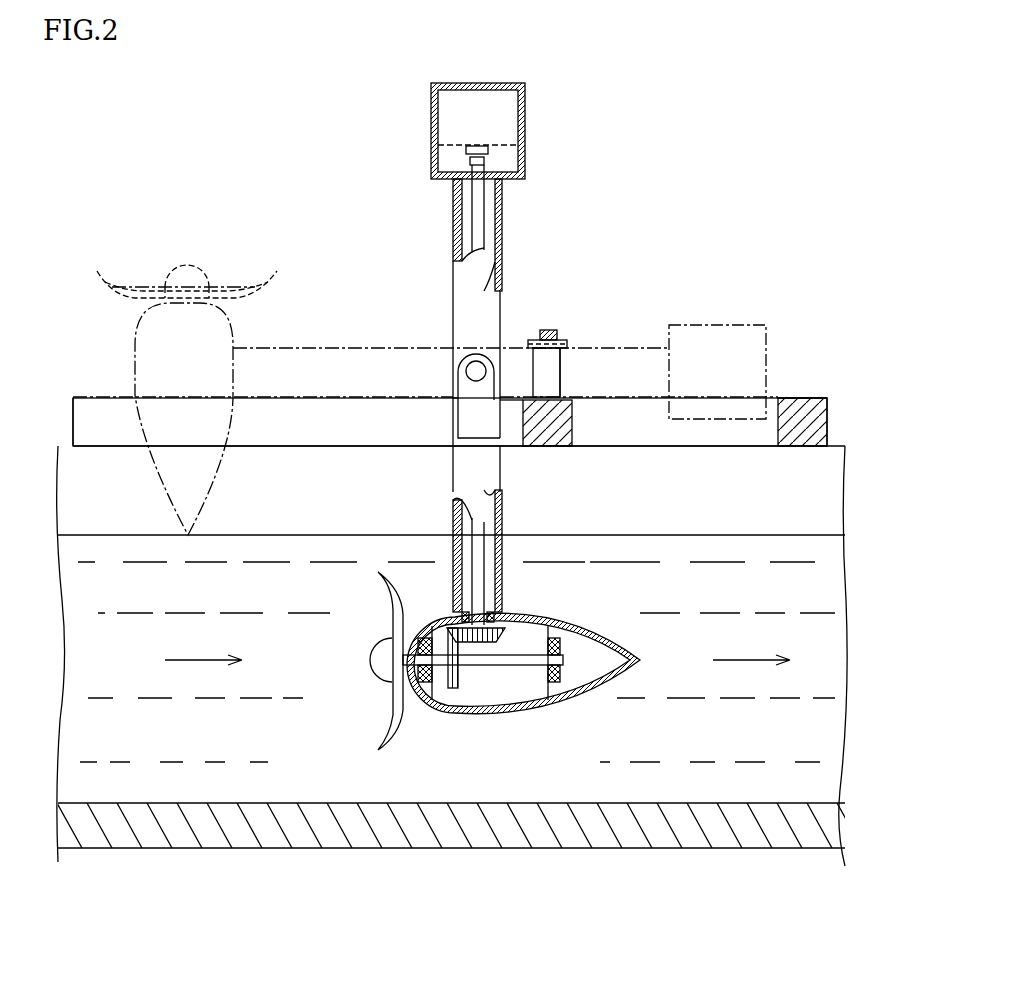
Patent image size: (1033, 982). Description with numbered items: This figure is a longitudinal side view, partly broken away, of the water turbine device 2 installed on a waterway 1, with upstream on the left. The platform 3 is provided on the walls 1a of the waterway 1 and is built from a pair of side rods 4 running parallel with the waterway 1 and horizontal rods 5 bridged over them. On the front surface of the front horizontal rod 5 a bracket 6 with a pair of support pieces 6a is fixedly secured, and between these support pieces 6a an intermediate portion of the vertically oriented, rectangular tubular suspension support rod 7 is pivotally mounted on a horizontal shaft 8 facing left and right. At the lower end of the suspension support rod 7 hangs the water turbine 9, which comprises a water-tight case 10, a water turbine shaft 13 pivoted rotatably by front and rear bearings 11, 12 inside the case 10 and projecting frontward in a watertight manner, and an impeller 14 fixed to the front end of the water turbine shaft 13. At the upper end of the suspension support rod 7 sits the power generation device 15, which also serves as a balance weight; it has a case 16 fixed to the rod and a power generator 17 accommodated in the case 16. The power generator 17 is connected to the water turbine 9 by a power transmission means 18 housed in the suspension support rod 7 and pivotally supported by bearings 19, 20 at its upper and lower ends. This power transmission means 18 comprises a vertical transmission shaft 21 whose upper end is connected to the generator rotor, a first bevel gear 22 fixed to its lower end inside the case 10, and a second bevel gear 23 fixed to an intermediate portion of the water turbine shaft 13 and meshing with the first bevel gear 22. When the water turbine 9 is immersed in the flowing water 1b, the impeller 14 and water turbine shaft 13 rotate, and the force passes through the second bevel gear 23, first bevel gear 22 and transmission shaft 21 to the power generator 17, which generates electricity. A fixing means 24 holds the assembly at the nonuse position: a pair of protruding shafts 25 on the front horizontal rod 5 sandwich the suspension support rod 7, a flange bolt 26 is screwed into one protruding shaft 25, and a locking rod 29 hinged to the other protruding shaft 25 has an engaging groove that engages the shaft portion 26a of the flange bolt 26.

The waterway 1 is at (832, 440).
The wall 1a is at (80, 497).
The flowing water 1b is at (693, 535).
The water turbine device 2 is at (450, 265).
The platform 3 is at (801, 396).
The side rod 4 is at (710, 410).
The horizontal rod 5 is at (560, 424).
The bracket 6 is at (478, 440).
The support piece 6a is at (456, 412).
The suspension support rod 7 is at (453, 300).
The horizontal shaft 8 is at (462, 370).
The water turbine 9 is at (135, 375).
The water-tight case 10 is at (520, 712).
The front bearing 11 is at (455, 692).
The rear bearing 12 is at (562, 672).
The water turbine shaft 13 is at (522, 668).
The impeller 14 is at (138, 284).
The power generation device 15 is at (532, 98).
The case 16 is at (525, 135).
The power generator 17 is at (495, 105).
The power transmission means 18 is at (486, 213).
The bearing 19 is at (462, 212).
The bearing 20 is at (494, 612).
The transmission shaft 21 is at (497, 525).
The first bevel gear 22 is at (507, 634).
The second bevel gear 23 is at (452, 700).
The fixing means 24 is at (553, 330).
The protruding shaft 25 is at (563, 380).
The flange bolt 26 is at (548, 340).
The shaft portion 26a is at (566, 346).
The locking rod 29 is at (562, 352).